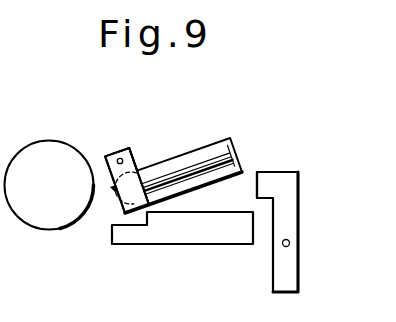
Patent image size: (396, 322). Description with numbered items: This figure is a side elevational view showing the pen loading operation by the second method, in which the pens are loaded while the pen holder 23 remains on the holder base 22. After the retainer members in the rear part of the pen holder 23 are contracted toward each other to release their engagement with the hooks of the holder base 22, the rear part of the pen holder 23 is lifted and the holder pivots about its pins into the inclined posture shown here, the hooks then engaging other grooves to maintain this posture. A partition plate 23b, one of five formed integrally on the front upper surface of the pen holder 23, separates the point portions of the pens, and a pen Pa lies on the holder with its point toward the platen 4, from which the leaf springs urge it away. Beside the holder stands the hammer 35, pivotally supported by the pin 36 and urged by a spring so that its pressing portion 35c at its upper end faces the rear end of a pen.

The platen 4 is at (47, 162).
The holder base 22 is at (179, 232).
The pen holder 23 is at (240, 158).
The partition plate 23b is at (135, 148).
The pen Pa is at (200, 154).
The hammer 35 is at (287, 210).
The pressing portion 35c is at (267, 182).
The pin 36 is at (282, 244).